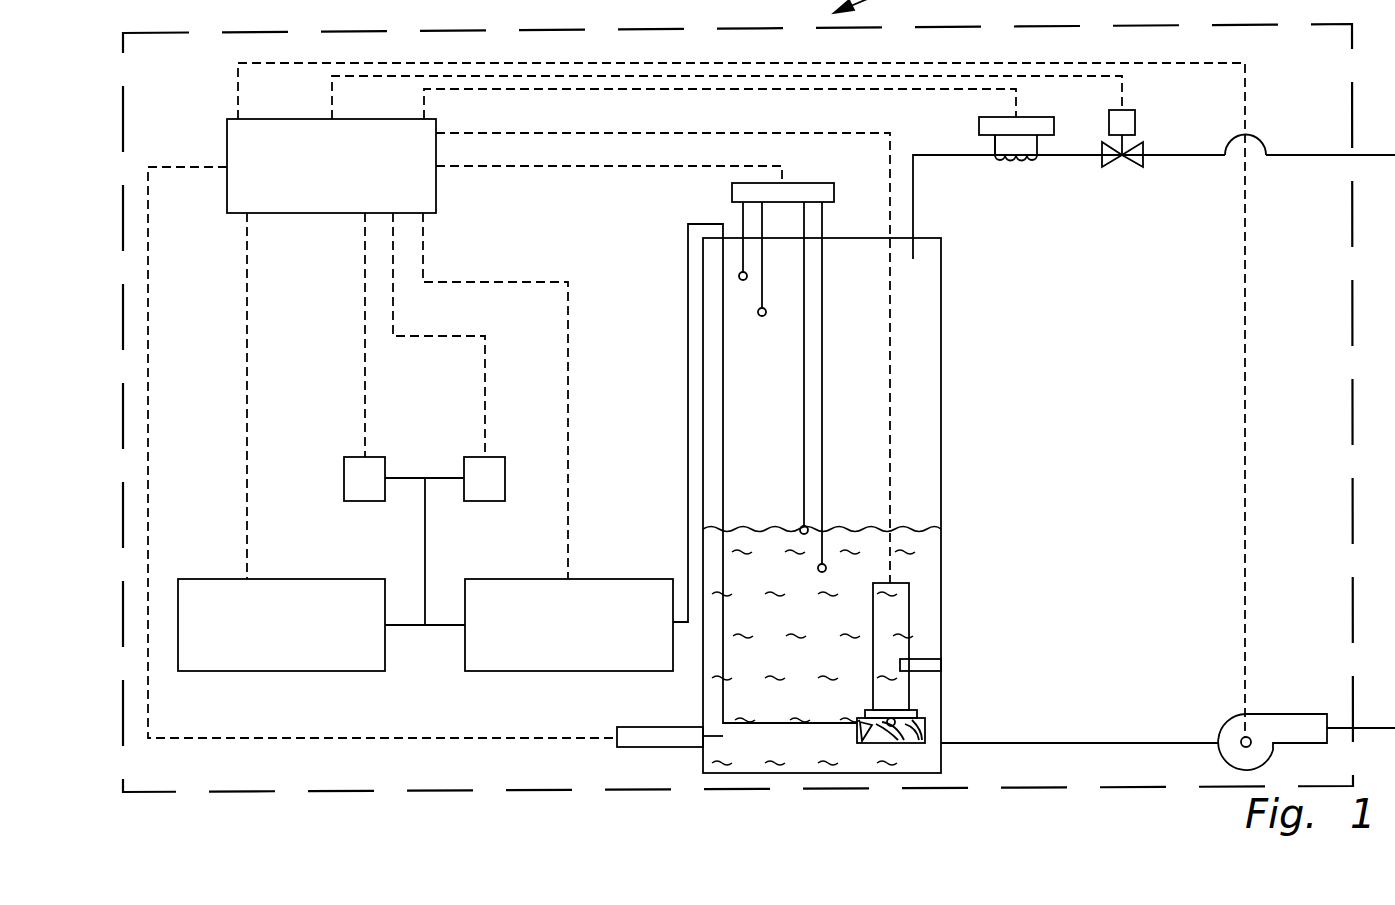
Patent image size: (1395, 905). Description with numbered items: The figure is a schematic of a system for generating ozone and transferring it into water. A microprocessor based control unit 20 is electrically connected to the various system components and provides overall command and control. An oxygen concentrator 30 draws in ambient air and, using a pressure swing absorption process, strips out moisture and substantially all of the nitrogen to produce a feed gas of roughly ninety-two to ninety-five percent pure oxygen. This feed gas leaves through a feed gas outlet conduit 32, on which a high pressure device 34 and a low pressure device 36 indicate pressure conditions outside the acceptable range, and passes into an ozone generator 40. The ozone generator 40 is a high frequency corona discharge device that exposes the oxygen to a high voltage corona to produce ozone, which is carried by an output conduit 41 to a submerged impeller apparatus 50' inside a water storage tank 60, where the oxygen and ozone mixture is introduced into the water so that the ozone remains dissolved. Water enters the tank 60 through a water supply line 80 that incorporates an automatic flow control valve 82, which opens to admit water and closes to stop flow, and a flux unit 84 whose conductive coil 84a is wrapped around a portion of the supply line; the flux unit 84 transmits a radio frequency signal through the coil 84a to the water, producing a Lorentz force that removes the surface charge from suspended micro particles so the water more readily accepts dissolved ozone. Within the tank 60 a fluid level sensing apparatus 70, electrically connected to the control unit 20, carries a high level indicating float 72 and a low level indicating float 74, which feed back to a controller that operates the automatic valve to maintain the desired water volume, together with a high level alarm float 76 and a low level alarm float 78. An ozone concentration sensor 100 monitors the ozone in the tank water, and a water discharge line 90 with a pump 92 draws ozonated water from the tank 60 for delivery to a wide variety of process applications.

The control unit 20 is at (227, 119).
The oxygen concentrator 30 is at (298, 578).
The feed gas outlet conduit 32 is at (425, 627).
The high pressure device 34 is at (357, 457).
The low pressure device 36 is at (477, 457).
The ozone generator 40 is at (600, 577).
The output conduit 41 is at (687, 373).
The impeller apparatus 50' is at (945, 643).
The water storage tank 60 is at (942, 483).
The fluid level sensing apparatus 70 is at (731, 196).
The high level indicating float 72 is at (765, 317).
The low level indicating float 74 is at (798, 529).
The high level alarm float 76 is at (750, 275).
The low level alarm float 78 is at (816, 568).
The water supply line 80 is at (1177, 157).
The flow control valve 82 is at (1135, 120).
The flux unit 84 is at (1032, 117).
The conductive coil 84a is at (1017, 162).
The water discharge line 90 is at (1082, 743).
The pump 92 is at (1230, 722).
The ozone concentration sensor 100 is at (643, 727).